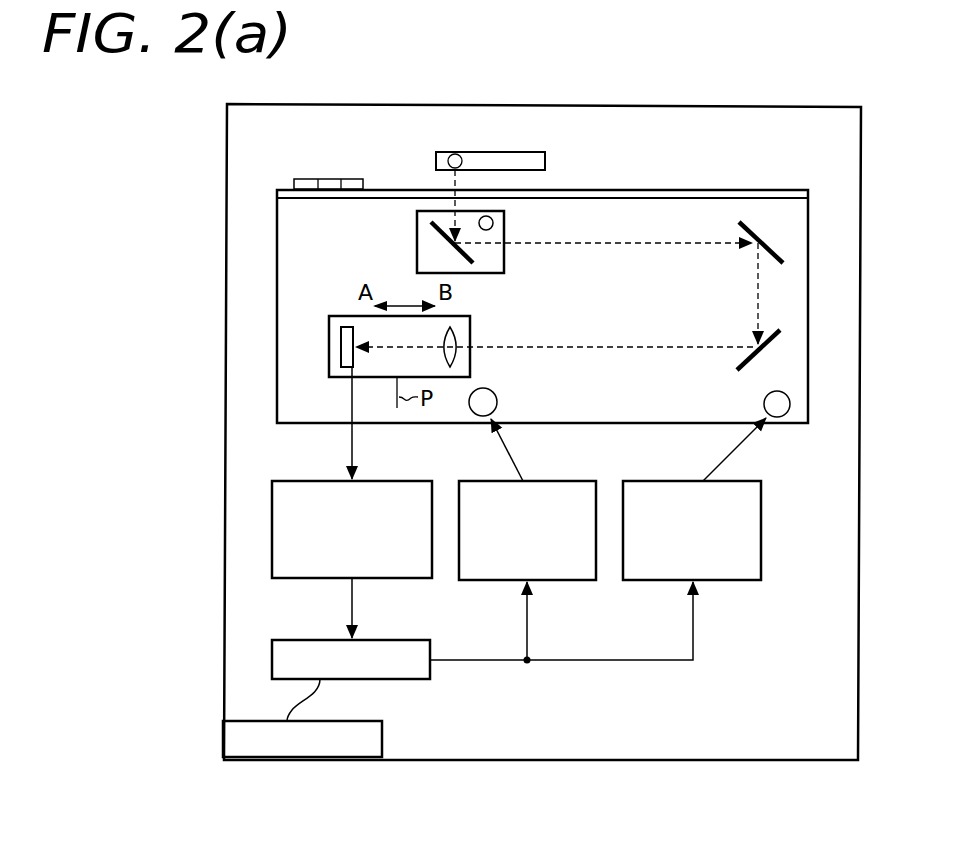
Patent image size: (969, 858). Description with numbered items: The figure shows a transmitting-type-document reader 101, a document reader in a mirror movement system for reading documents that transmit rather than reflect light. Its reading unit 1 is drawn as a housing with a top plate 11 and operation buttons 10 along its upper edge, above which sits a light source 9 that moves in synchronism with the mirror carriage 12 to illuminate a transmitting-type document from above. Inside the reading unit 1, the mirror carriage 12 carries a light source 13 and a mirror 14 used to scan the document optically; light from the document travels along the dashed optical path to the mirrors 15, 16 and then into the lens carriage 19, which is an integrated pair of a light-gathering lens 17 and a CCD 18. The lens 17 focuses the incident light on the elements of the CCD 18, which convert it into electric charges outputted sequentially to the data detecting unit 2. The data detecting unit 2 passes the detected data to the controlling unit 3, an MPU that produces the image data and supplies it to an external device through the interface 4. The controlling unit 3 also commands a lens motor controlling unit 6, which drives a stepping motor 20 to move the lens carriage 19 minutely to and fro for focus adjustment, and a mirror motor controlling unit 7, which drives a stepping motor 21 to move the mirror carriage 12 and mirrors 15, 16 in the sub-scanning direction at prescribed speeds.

The transmitting-type-document reader 101 is at (784, 86).
The reading unit 1 is at (809, 238).
The top plate / glass platen 11 is at (750, 190).
The operation buttons 10 is at (336, 179).
The light source (lamp) 9 is at (546, 161).
The mirror carriage 12 is at (505, 260).
The light source (lamp) 13 is at (494, 223).
The mirror 14 is at (442, 236).
The mirror 15 is at (757, 236).
The mirror 16 is at (740, 352).
The light-gathering lens 17 is at (456, 354).
The CCD 18 is at (341, 345).
The lens carriage 19 is at (471, 330).
The stepping motor 20 is at (497, 401).
The stepping motor 21 is at (764, 404).
The data detecting unit 2 is at (394, 481).
The controlling unit 3 is at (405, 640).
The interface 4 is at (383, 737).
The lens motor controlling unit 6 is at (580, 481).
The mirror motor controlling unit 7 is at (740, 481).